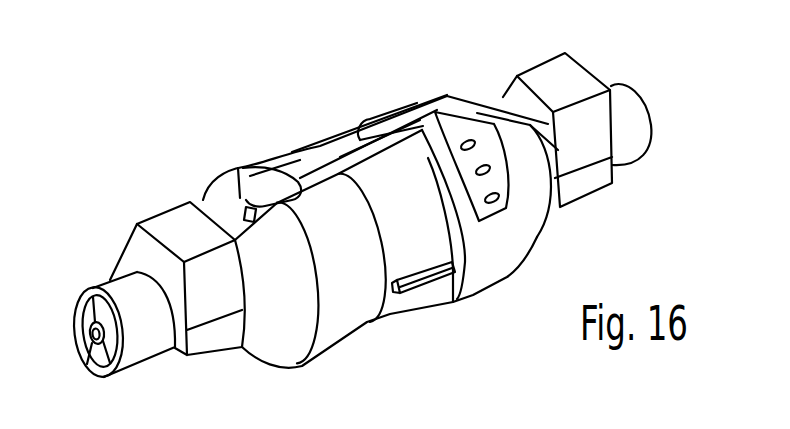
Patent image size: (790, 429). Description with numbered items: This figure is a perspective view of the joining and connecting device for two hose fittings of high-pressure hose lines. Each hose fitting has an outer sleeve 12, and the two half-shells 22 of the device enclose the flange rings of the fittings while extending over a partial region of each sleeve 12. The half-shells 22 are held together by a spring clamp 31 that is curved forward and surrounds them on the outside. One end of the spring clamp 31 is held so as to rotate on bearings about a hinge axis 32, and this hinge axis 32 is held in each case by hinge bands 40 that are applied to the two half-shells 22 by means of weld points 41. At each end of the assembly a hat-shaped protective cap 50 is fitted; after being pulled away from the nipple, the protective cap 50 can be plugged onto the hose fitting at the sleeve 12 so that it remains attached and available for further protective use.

The outer sleeve 12 is at (634, 113).
The half-shells 22 is at (297, 333).
The spring clamp 31 is at (405, 308).
The hinge axis 32 is at (335, 162).
The hinge bands 40 is at (455, 116).
The weld points 41 is at (471, 137).
The protective cap 50 is at (570, 78).